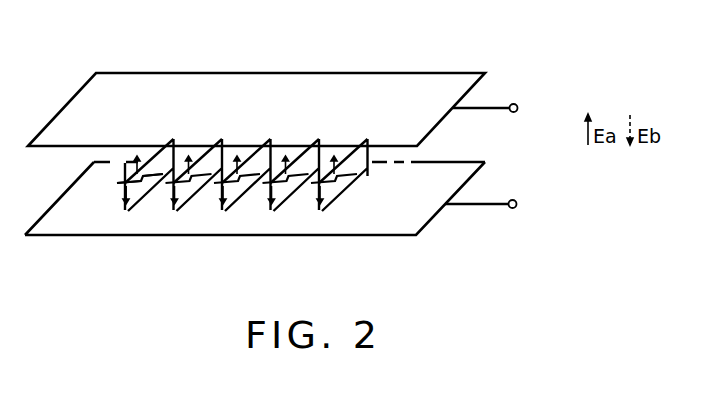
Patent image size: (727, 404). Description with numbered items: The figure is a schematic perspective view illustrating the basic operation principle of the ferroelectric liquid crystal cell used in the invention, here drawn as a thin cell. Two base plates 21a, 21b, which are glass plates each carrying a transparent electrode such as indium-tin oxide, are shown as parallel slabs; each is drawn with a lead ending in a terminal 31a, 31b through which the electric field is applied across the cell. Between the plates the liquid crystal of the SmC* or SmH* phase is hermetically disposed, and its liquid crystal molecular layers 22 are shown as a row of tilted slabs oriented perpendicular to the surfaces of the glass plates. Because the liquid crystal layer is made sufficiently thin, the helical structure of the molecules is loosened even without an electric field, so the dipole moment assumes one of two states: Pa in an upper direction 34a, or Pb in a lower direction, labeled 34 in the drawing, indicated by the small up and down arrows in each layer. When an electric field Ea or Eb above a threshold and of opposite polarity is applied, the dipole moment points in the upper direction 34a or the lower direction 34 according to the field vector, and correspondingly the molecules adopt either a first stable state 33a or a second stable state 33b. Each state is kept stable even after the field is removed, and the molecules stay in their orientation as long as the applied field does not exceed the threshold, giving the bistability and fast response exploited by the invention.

The base plate 21a is at (445, 82).
The base plate 21b is at (457, 180).
The lead terminal of upper electrode 31a is at (516, 104).
The lead terminal of lower electrode 31b is at (515, 208).
The liquid crystal molecular layers 22 is at (367, 142).
The upper direction 34a is at (137, 163).
The lower strip electrode (polarization Pb) 34 is at (118, 212).
The first stable state 33a is at (160, 178).
The second stable state 33b is at (140, 210).